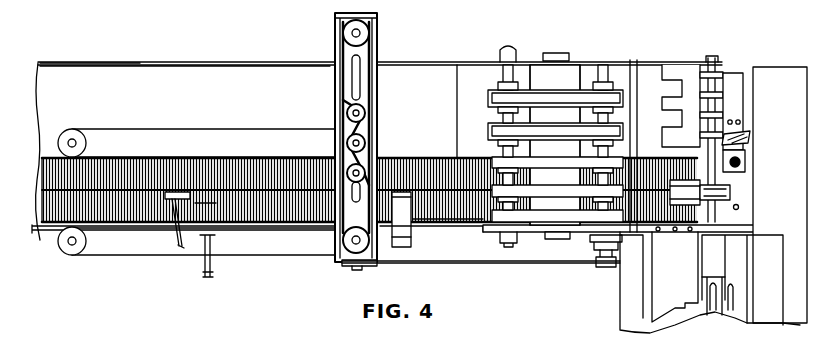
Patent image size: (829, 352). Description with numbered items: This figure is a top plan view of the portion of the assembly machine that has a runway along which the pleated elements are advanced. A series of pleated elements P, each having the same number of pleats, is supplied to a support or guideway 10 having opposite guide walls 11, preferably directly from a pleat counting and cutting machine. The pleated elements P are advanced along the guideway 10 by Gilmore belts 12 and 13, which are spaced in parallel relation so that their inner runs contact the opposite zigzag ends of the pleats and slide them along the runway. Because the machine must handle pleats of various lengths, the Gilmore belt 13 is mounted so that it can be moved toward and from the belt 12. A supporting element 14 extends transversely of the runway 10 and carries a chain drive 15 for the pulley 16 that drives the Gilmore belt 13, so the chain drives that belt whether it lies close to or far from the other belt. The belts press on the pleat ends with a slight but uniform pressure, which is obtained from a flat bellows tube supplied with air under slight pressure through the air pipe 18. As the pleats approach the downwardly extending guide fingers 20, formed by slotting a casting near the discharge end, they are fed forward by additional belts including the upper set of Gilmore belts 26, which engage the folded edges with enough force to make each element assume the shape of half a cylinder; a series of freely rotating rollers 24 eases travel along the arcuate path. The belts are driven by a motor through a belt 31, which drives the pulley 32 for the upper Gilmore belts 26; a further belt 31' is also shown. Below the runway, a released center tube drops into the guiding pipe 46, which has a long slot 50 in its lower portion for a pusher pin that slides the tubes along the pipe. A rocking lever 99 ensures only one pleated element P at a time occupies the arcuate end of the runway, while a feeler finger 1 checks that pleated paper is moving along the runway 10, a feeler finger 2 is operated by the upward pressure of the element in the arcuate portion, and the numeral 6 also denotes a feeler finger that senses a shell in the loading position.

The feeler finger 1 is at (203, 202).
The feeler finger 2 is at (751, 139).
The feeler finger 6 is at (121, 88).
The guideway 10 is at (199, 113).
The guide walls 11 is at (119, 62).
The Gilmore belt 12 is at (291, 250).
The Gilmore belt 13 is at (258, 128).
The supporting element 14 is at (378, 30).
The chain drive 15 is at (368, 100).
The pulley 16 is at (366, 143).
The air pipe 18 is at (213, 272).
The guide fingers 20 is at (673, 70).
The rollers 24 is at (723, 115).
The upper set of Gilmore belts 26 is at (545, 130).
The belt 31 is at (567, 262).
The mounting bolt 31' is at (456, 276).
The pulley 32 is at (601, 268).
The guiding pipe 46 is at (713, 277).
The long slot 50 is at (718, 307).
The rocking lever 99 is at (703, 186).
The pleated elements P is at (283, 178).